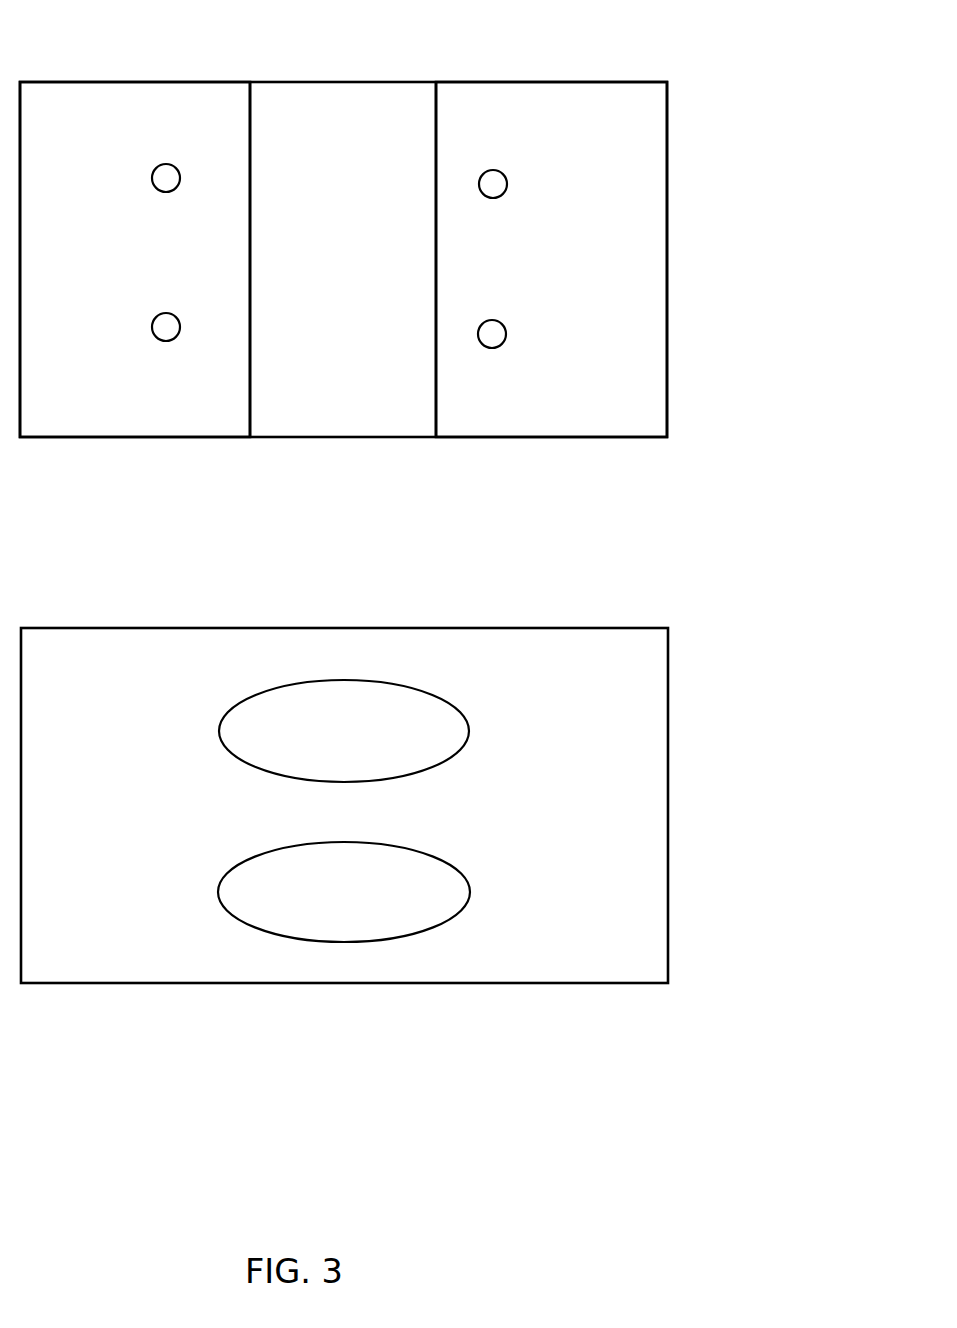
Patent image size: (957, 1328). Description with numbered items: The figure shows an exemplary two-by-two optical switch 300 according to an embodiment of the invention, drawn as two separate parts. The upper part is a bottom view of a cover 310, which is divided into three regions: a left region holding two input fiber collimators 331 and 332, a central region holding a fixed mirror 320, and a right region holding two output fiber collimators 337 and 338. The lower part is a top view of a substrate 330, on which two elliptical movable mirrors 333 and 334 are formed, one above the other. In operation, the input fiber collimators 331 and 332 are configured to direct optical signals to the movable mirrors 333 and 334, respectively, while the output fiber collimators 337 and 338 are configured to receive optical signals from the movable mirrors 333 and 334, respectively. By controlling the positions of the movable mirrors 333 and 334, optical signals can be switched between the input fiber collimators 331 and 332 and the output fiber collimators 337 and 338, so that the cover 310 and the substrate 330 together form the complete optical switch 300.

The optical switch 300 is at (483, 1288).
The cover 310 is at (700, 288).
The fixed mirror 320 is at (318, 111).
The substrate 330 is at (691, 875).
The input fiber collimator 331 is at (124, 413).
The input fiber collimator 332 is at (100, 103).
The elliptical movable mirror 333 is at (298, 658).
The elliptical movable mirror 334 is at (392, 959).
The output fiber collimator 337 is at (528, 397).
The output fiber collimator 338 is at (516, 124).